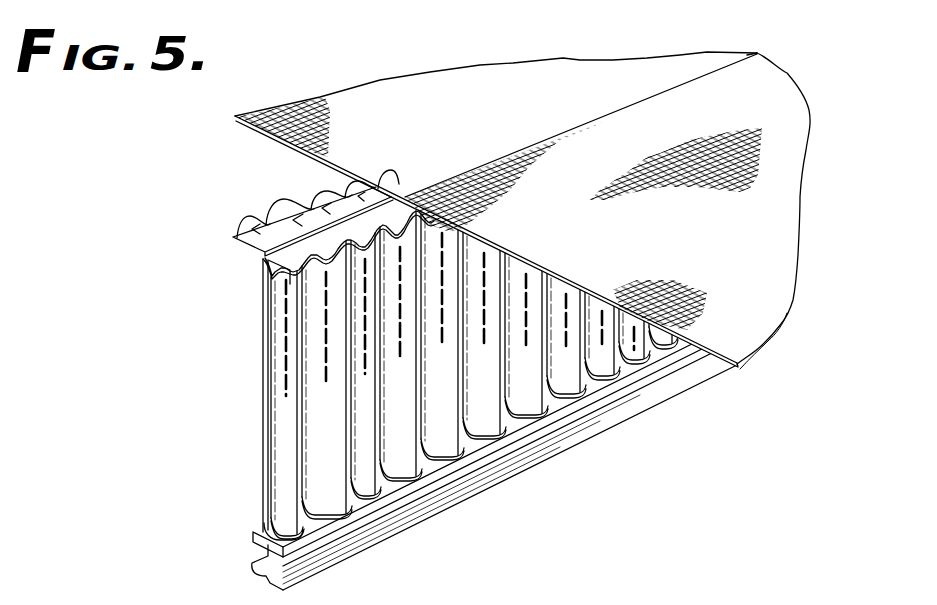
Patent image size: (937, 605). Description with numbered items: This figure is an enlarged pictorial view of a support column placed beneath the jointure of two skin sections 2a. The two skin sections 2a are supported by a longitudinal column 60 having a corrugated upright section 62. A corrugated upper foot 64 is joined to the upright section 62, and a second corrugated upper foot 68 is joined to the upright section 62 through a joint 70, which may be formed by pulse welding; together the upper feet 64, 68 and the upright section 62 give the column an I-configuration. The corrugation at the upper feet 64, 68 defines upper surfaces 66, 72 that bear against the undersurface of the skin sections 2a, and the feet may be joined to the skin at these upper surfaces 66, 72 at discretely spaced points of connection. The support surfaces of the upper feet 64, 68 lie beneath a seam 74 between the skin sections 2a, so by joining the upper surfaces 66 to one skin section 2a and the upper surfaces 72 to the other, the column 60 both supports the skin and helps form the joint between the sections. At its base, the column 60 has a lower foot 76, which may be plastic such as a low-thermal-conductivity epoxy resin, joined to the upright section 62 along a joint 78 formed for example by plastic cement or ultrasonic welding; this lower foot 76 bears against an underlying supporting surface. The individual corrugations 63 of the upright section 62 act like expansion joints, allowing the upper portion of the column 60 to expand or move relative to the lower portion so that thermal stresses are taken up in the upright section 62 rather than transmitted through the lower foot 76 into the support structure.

The skin sections 2a is at (424, 77).
The longitudinal column 60 is at (437, 404).
The corrugated upright section 62 is at (263, 453).
The corrugations 63 is at (455, 424).
The corrugated upper foot 64 is at (263, 254).
The upper surfaces 66 is at (335, 192).
The second corrugated upper foot 68 is at (263, 261).
The joint 70 is at (263, 272).
The upper surfaces 72 is at (397, 208).
The seam 74 is at (737, 63).
The lower foot 76 is at (253, 570).
The joint 78 is at (268, 520).